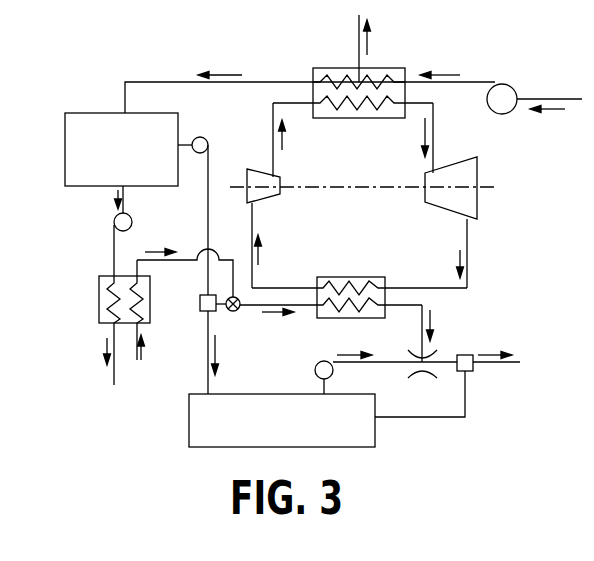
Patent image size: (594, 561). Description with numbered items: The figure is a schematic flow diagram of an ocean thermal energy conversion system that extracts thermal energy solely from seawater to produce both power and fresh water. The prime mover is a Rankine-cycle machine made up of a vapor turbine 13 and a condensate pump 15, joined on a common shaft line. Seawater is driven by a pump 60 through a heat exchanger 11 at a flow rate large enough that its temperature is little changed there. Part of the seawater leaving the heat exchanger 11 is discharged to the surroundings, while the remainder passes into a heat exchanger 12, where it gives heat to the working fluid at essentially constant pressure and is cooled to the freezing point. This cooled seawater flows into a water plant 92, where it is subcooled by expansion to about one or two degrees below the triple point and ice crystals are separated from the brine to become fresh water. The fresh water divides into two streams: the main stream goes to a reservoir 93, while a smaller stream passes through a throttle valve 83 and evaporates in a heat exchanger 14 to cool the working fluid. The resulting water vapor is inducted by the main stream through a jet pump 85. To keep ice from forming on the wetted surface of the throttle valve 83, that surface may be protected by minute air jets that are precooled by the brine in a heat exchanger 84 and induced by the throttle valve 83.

The heat exchanger 11 is at (374, 68).
The heat exchanger 12 is at (313, 72).
The vapor turbine 13 is at (450, 166).
The heat exchanger 14 is at (358, 277).
The condensate pump 15 is at (281, 183).
The pump 60 is at (518, 83).
The throttle valve 83 is at (234, 311).
The heat exchanger 84 is at (99, 306).
The jet pump 85 is at (432, 360).
The water plant 92 is at (160, 113).
The reservoir 93 is at (228, 394).